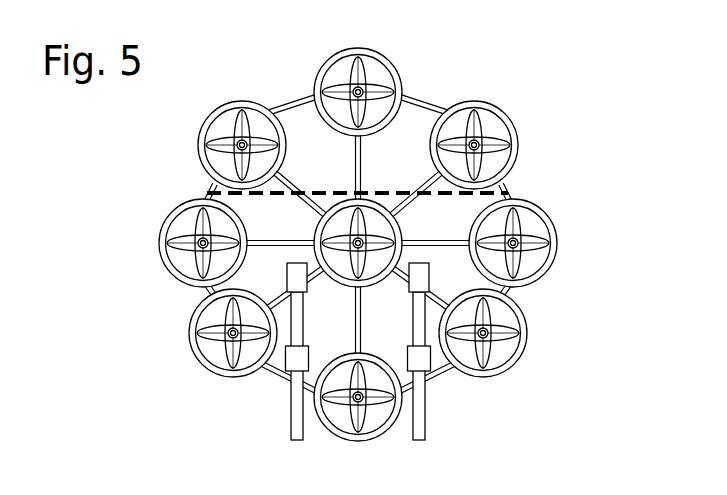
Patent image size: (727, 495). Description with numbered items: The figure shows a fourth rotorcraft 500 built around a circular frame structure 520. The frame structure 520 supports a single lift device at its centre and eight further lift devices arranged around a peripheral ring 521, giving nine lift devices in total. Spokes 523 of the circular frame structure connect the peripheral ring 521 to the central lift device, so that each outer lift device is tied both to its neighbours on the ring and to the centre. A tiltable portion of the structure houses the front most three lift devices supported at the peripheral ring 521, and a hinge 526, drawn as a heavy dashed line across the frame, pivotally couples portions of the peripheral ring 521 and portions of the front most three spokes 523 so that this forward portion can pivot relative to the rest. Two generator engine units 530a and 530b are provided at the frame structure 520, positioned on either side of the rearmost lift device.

The fourth rotorcraft 500 is at (582, 134).
The circular frame structure 520 is at (165, 308).
The peripheral ring 521 is at (431, 103).
The spokes 523 is at (355, 157).
The hinge 526 is at (453, 197).
The generator engine unit 530a is at (297, 415).
The generator engine unit 530b is at (420, 408).